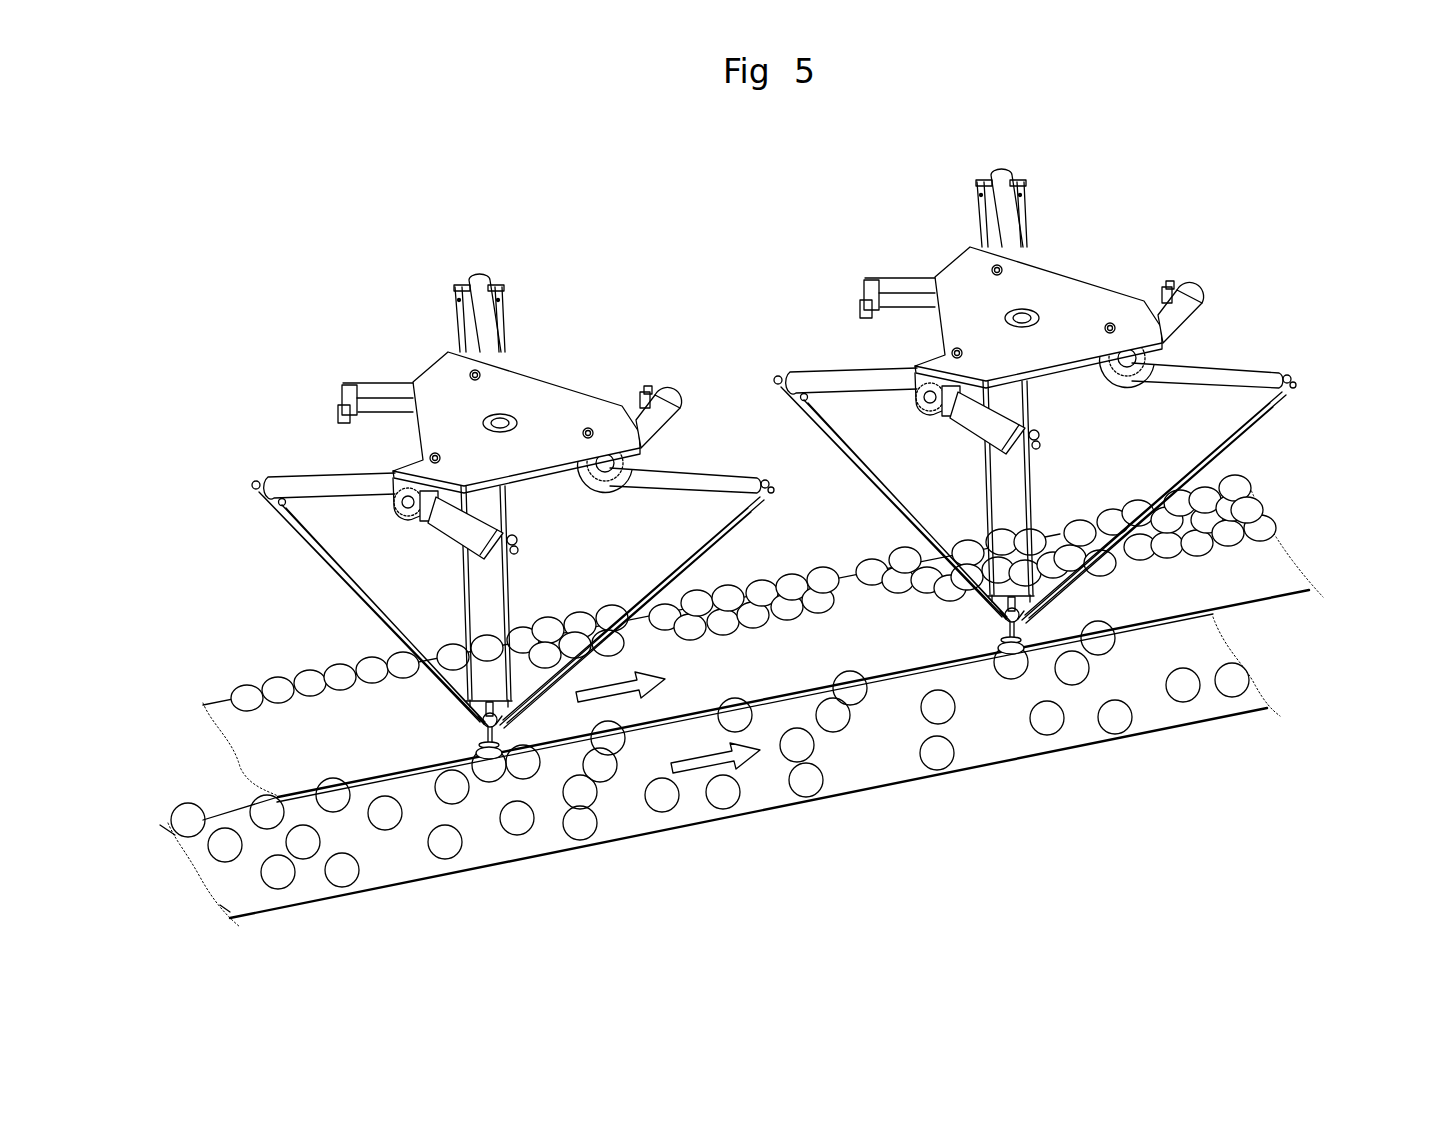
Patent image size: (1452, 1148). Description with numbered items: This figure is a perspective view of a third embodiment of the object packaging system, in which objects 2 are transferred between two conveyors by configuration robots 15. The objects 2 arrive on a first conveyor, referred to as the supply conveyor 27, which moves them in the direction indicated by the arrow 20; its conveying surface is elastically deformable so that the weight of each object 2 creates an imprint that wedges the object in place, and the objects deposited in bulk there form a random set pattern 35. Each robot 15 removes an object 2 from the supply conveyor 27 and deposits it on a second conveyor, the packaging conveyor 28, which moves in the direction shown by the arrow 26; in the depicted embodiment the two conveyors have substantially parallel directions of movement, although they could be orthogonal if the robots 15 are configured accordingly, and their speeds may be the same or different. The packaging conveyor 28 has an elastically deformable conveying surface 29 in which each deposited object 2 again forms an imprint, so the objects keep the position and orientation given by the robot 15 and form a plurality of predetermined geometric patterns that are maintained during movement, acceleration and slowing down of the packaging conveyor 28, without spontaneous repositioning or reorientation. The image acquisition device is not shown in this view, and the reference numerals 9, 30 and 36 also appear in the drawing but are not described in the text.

The objects 2 is at (489, 773).
The gripper 9 is at (476, 750).
The configuration robot 15 is at (442, 397).
The movement direction 20 is at (702, 760).
The movement direction 26 is at (610, 690).
The supply conveyor 27 is at (1270, 668).
The packaging conveyor 28 is at (1302, 546).
The conveying surface 29 is at (330, 720).
The group of products 30 is at (1197, 542).
The random set pattern 35 is at (1140, 685).
The conveyor 36 is at (850, 826).